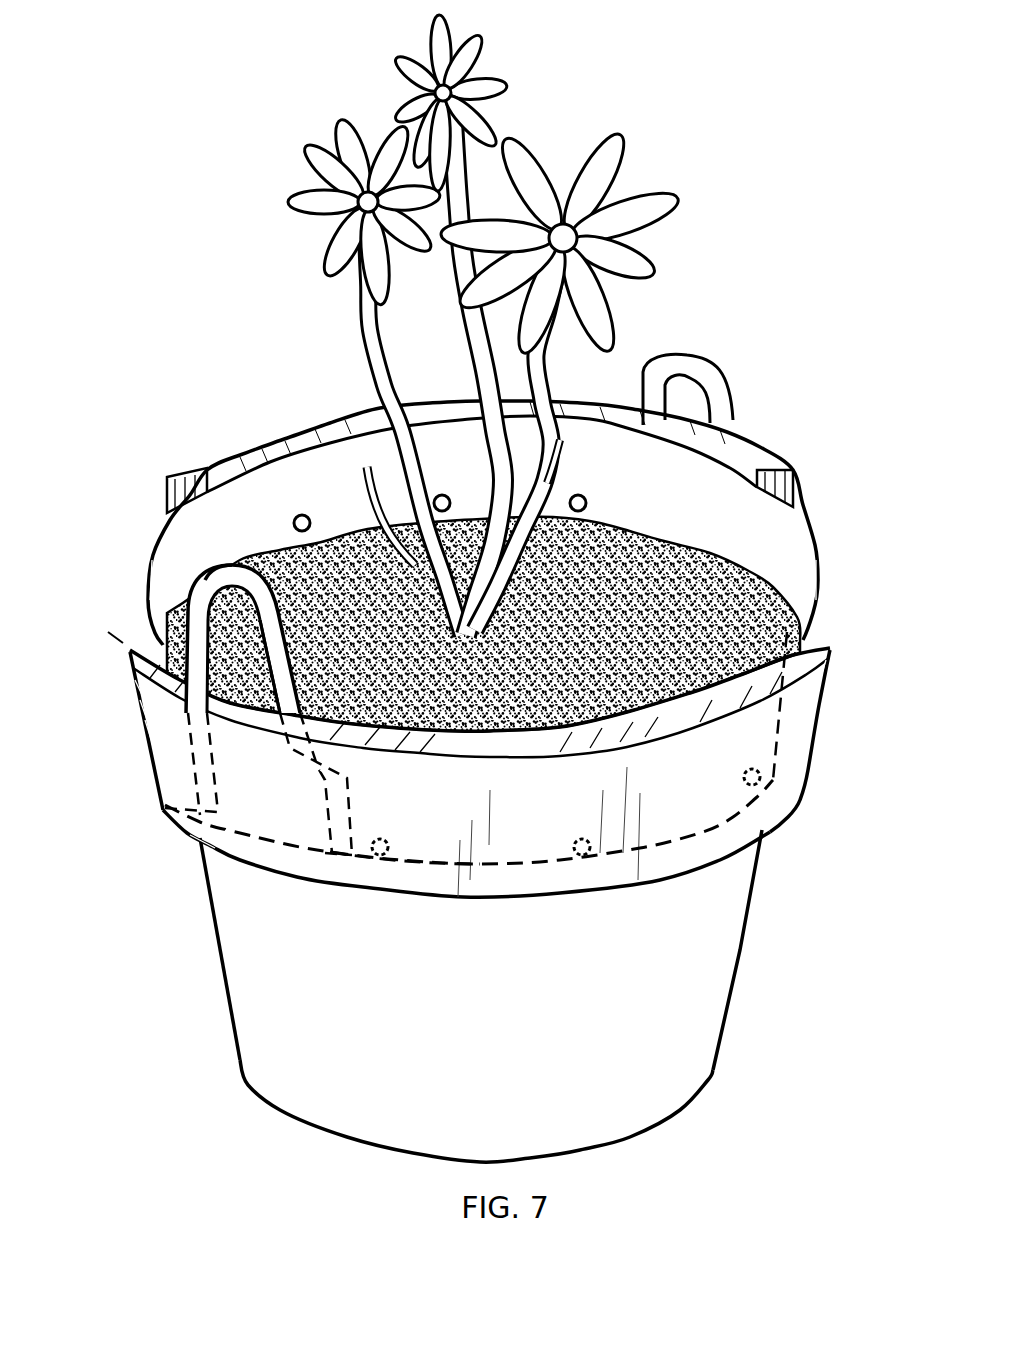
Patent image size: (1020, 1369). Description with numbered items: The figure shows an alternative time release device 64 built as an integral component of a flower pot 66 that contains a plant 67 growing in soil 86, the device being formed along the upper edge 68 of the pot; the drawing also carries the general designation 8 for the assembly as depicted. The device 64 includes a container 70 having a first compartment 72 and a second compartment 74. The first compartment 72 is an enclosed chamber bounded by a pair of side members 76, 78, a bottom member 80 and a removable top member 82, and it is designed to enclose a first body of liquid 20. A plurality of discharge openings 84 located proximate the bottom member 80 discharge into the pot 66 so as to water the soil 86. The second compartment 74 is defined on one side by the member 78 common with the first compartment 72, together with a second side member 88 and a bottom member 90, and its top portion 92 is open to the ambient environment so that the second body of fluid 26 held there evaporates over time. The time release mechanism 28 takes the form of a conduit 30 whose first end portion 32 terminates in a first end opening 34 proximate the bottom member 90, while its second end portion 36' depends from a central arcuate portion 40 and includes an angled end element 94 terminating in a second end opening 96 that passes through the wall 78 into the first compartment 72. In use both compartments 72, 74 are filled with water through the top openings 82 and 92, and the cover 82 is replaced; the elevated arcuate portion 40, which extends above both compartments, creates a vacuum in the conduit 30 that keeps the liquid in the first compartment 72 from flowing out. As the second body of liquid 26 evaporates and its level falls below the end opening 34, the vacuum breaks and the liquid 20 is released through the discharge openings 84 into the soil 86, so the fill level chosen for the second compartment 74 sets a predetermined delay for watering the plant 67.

The plant container assembly 8 is at (135, 617).
The first body of liquid 20 is at (650, 817).
The second body of fluid 26 is at (300, 812).
The time release mechanism 28 is at (212, 567).
The conduit 30 is at (220, 573).
The first end portion 32 is at (173, 793).
The first end opening 34 is at (208, 840).
The second end portion 36' is at (258, 784).
The central arcuate portion 40 is at (258, 597).
The time release device 64 is at (817, 633).
The flower pot 66 is at (368, 1050).
The plant 67 is at (360, 333).
The upper edge 68 is at (147, 563).
The container 70 is at (833, 697).
The first compartment 72 is at (790, 770).
The second compartment 74 is at (170, 713).
The side member 76 is at (797, 747).
The side member 78 is at (355, 862).
The bottom member 80 is at (511, 884).
The removable top member 82 is at (690, 710).
The discharge openings 84 is at (586, 505).
The soil 86 is at (667, 597).
The second side member 88 is at (173, 767).
The bottom member 90 is at (290, 767).
The top portion 92 is at (168, 680).
The angled end element 94 is at (233, 837).
The second end opening 96 is at (333, 777).